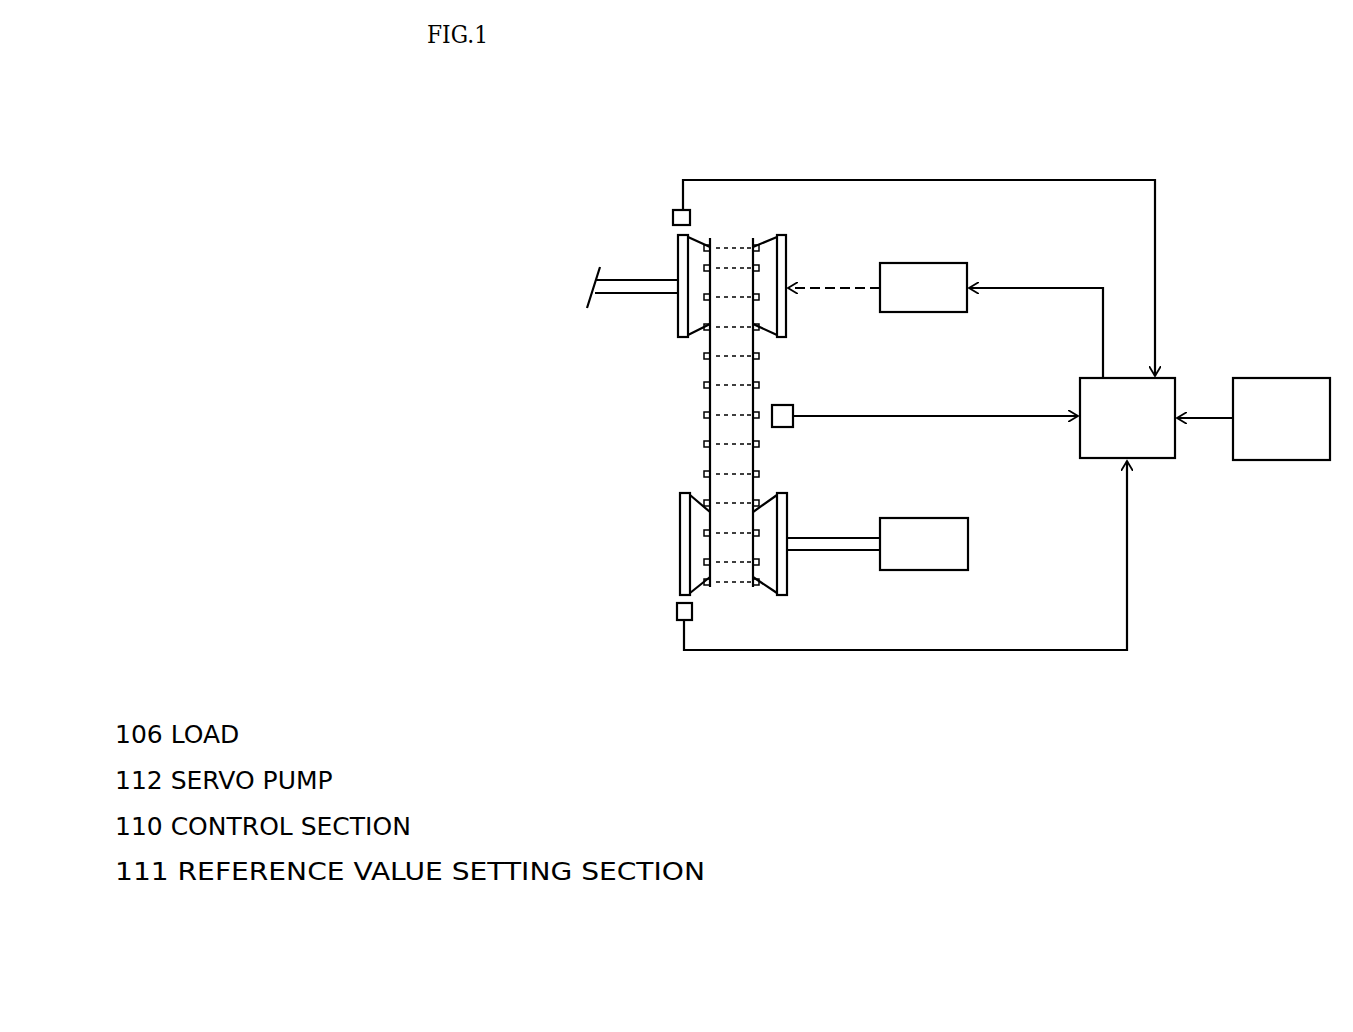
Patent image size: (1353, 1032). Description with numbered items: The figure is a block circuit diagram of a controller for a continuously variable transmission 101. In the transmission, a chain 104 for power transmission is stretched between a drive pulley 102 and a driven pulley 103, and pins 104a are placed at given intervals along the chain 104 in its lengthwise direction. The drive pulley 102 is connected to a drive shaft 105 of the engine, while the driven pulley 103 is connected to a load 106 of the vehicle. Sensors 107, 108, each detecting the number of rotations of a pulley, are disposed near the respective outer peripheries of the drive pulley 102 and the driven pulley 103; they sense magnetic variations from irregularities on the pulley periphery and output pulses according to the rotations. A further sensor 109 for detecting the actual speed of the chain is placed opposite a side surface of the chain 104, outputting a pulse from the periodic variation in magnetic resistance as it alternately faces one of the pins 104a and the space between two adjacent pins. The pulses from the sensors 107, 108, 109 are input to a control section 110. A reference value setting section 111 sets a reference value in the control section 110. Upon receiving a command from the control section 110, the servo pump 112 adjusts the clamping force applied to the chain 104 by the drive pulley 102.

The continuously variable transmission 101 is at (630, 392).
The drive pulley 102 is at (680, 270).
The driven pulley 103 is at (680, 560).
The chain 104 is at (710, 463).
The pins 104a is at (760, 385).
The drive shaft 105 is at (618, 295).
The load 106 is at (968, 545).
The sensor 107 is at (690, 218).
The sensor 108 is at (692, 612).
The sensor 109 is at (783, 427).
The control section 110 is at (1168, 378).
The reference value setting section 111 is at (1282, 378).
The servo pump 112 is at (967, 275).